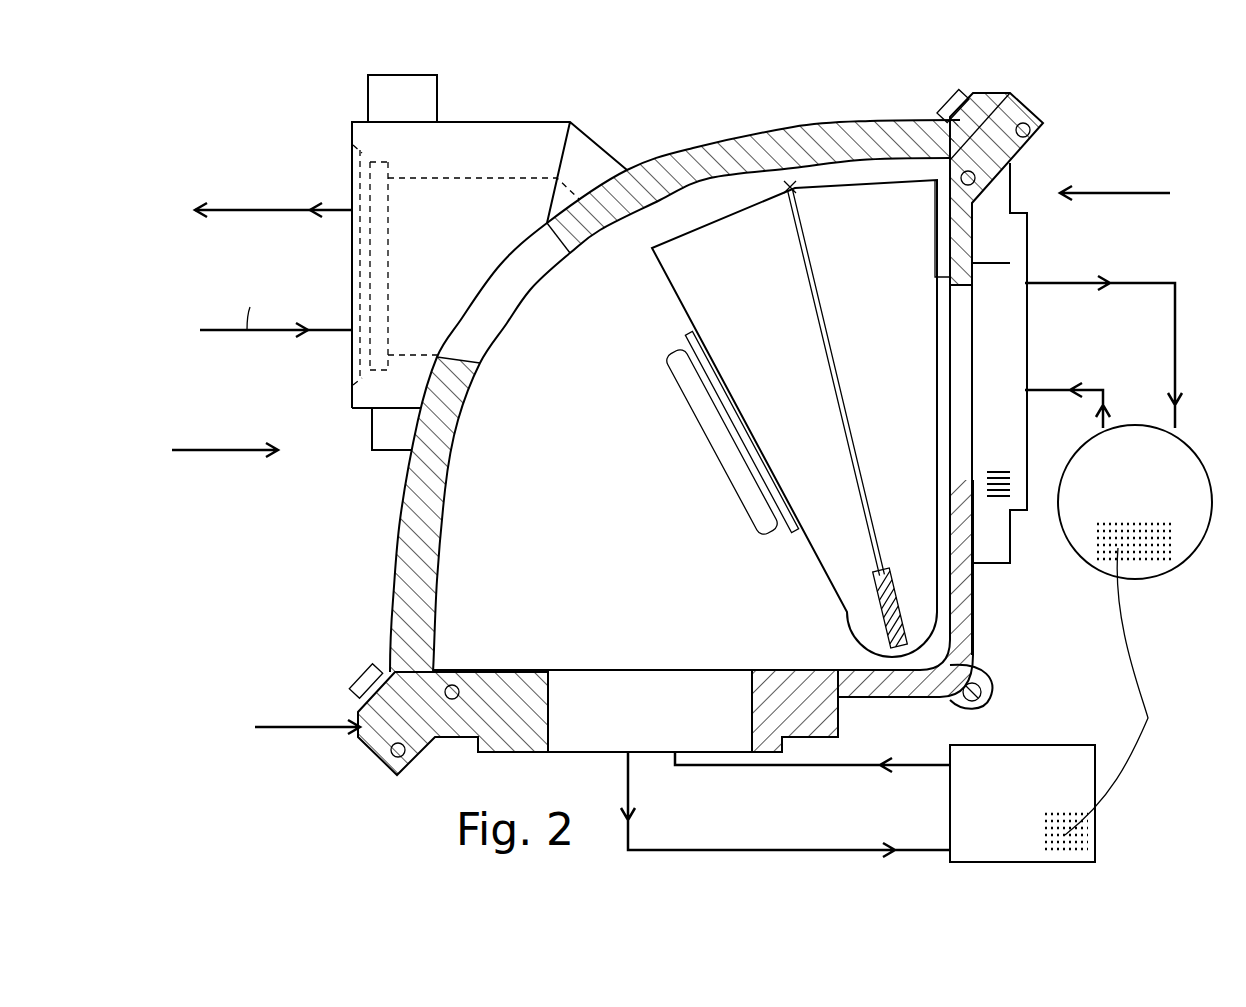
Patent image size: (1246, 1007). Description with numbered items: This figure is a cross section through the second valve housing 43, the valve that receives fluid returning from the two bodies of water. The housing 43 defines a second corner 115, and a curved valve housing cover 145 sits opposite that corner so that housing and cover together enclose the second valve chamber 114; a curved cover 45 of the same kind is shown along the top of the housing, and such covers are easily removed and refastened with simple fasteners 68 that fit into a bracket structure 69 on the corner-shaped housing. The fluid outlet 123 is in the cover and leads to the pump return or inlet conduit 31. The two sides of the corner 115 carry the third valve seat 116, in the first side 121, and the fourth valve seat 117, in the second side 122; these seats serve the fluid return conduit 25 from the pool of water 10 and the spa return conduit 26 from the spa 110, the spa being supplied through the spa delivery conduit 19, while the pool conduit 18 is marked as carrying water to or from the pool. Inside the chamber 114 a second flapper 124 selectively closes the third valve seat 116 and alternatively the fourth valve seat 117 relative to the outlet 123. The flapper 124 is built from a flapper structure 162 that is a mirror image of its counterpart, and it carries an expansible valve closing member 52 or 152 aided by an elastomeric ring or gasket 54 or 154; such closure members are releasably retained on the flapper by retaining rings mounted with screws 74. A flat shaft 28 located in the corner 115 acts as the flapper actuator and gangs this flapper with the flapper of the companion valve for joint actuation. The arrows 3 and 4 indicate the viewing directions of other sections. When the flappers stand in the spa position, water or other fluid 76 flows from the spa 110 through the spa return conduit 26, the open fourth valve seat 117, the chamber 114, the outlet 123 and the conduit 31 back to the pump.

The section view direction 3 is at (211, 450).
The section view direction 4 is at (1126, 194).
The pool of water 10 is at (1022, 803).
The pool conduit 18 is at (628, 770).
The spa supply conduit 19 is at (1140, 283).
The fluid return conduit 25 is at (850, 766).
The spa return conduit 26 is at (1105, 425).
The flat shaft 28 is at (880, 592).
The pump return conduit 31 is at (252, 210).
The valve housing 43 is at (290, 727).
The valve housing cover 45 is at (727, 142).
The expansible valve closing member 52 is at (702, 418).
The elastomeric ring 54 is at (777, 527).
The fasteners 68 is at (951, 108).
The bracket structure 69 is at (1017, 167).
The screws 74 is at (987, 693).
The fluid 76 is at (1119, 691).
The spa 110 is at (1135, 502).
The second valve chamber 114 is at (513, 552).
The second corner 115 is at (937, 637).
The third valve seat 116 is at (553, 750).
The fourth valve seat 117 is at (963, 290).
The first side 121 is at (847, 670).
The second side 122 is at (950, 593).
The fluid outlet 123 is at (490, 312).
The second flapper 124 is at (790, 185).
The valve housing cover 145 is at (413, 567).
The expansible valve closing member 152 is at (963, 413).
The elastomeric ring 154 is at (794, 418).
The flapper structure 162 is at (442, 498).